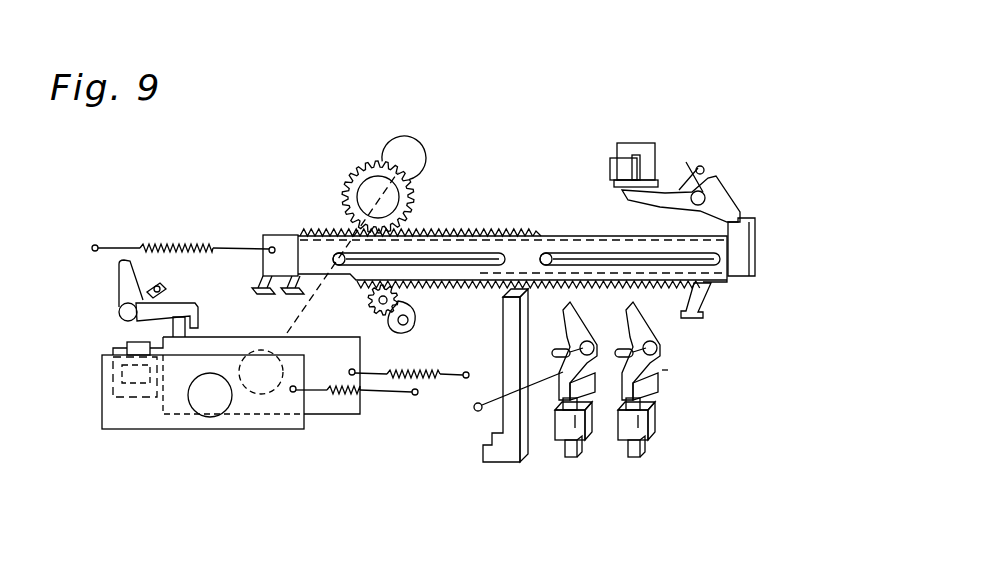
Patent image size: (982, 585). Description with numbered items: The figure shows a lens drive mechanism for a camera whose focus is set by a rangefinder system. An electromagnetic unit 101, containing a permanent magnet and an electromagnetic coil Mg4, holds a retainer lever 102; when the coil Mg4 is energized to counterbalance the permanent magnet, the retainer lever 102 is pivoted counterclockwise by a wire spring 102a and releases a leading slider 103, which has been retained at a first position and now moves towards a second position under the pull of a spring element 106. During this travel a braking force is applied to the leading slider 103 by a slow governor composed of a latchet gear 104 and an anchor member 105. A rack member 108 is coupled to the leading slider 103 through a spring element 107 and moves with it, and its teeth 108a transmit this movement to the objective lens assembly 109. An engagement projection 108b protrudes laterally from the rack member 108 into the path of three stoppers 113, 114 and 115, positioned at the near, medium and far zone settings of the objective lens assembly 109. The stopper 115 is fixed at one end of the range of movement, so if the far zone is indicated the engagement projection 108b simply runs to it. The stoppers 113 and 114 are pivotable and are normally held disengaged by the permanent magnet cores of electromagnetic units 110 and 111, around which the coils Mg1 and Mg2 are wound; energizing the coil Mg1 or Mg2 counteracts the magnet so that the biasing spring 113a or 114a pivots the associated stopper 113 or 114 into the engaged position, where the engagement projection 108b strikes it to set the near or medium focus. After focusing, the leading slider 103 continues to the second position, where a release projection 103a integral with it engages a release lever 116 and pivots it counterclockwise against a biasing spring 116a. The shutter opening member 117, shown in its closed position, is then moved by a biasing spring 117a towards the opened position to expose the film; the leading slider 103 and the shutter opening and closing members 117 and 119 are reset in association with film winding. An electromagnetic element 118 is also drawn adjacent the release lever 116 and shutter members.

The electromagnetic unit 101 is at (637, 143).
The electromagnetic coil Mg4 is at (615, 167).
The retainer lever 102 is at (720, 200).
The wire spring 102a is at (703, 167).
The leading slider 103 is at (752, 248).
The release projection 103a is at (258, 276).
The latchet gear 104 is at (369, 293).
The anchor member 105 is at (400, 336).
The spring element 106 is at (193, 246).
The spring element 107 is at (288, 288).
The rack member 108 is at (306, 250).
The teeth 108a is at (443, 228).
The engagement projection 108b is at (700, 310).
The objective lens assembly 109 is at (368, 194).
The electromagnetic unit 110 is at (643, 441).
The electromagnetic unit 111 is at (587, 441).
The stopper 113 is at (665, 308).
The biasing spring 113a is at (662, 370).
The stopper 114 is at (600, 312).
The biasing spring 114a is at (498, 383).
The stopper 115 is at (505, 317).
The release lever 116 is at (120, 268).
The biasing spring 116a is at (147, 289).
The shutter opening member 117 is at (259, 422).
The biasing spring 117a is at (372, 393).
The electromagnet 118 is at (137, 343).
The shutter closing member 119 is at (331, 412).
The electromagnetic coil Mg2 is at (560, 432).
The electromagnetic coil Mg1 is at (623, 432).